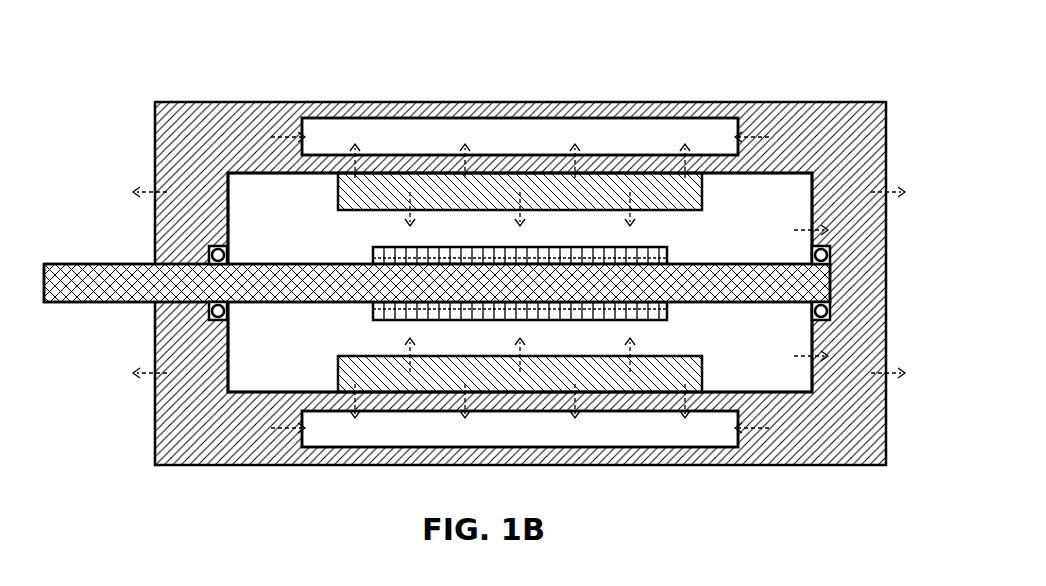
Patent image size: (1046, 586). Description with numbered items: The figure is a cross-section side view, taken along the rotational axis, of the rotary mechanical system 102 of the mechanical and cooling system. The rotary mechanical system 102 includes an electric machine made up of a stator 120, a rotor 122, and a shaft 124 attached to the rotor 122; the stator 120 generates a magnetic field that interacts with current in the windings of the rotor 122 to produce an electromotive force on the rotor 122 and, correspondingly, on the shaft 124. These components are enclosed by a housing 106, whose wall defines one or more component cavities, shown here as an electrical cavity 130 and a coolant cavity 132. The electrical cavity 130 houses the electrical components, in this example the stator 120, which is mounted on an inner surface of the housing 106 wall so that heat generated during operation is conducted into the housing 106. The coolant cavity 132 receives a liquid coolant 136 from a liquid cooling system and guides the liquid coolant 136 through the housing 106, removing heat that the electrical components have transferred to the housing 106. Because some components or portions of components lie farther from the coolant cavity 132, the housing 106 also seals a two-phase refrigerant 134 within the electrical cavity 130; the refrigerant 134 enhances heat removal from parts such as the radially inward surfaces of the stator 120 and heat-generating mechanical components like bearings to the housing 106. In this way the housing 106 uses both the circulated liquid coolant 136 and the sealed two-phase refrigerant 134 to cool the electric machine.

The rotary mechanical system 102 is at (497, 240).
The housing 106 is at (265, 130).
The stator 120 is at (618, 195).
The rotor 122 is at (545, 263).
The shaft 124 is at (830, 290).
The electrical cavity 130 is at (775, 233).
The coolant cavity 132 is at (497, 143).
The two-phase refrigerant 134 is at (302, 231).
The liquid coolant 136 is at (430, 440).